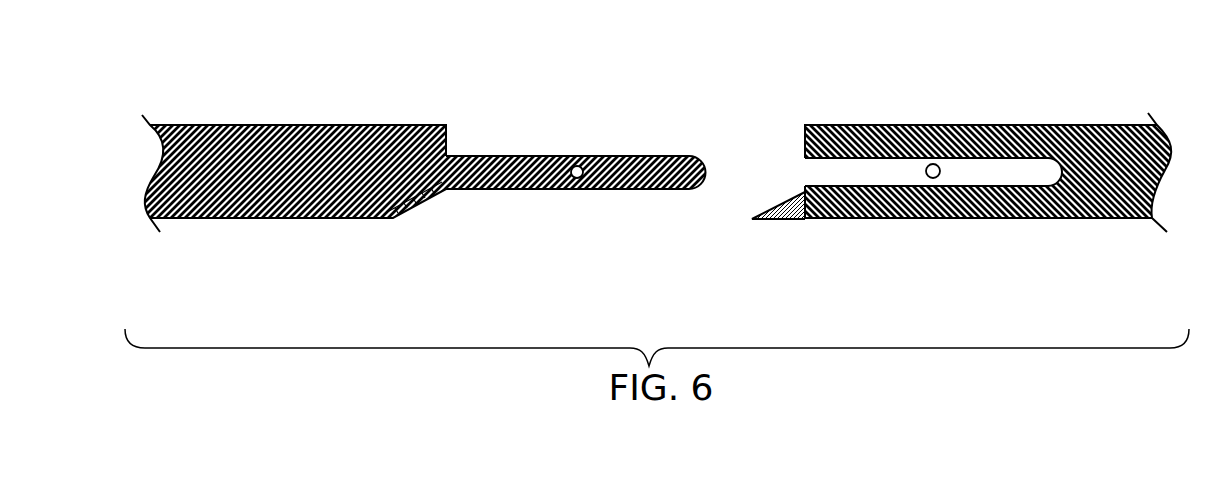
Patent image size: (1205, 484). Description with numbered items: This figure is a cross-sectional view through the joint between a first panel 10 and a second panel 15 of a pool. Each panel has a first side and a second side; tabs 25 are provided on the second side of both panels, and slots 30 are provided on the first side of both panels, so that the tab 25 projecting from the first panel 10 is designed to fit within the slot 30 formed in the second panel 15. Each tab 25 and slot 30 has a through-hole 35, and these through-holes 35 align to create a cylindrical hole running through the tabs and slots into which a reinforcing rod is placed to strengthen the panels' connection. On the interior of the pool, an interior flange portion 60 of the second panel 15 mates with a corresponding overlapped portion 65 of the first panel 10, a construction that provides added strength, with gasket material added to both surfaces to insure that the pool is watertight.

The first panel 10 is at (308, 218).
The second panel 15 is at (1062, 218).
The tab 25 is at (535, 189).
The slot 30 is at (805, 170).
The through-hole 35 is at (578, 166).
The interior flange portion 60 is at (772, 205).
The overlapped portion 65 is at (417, 208).